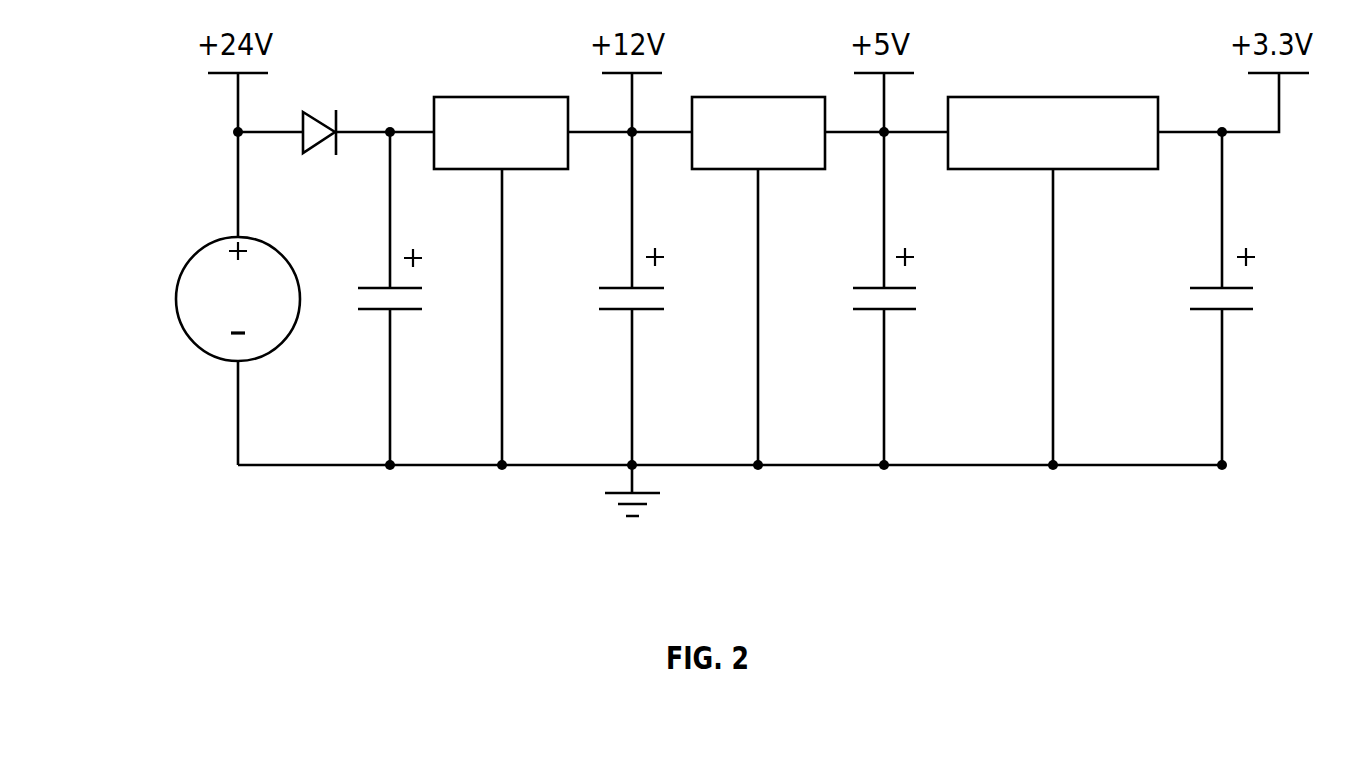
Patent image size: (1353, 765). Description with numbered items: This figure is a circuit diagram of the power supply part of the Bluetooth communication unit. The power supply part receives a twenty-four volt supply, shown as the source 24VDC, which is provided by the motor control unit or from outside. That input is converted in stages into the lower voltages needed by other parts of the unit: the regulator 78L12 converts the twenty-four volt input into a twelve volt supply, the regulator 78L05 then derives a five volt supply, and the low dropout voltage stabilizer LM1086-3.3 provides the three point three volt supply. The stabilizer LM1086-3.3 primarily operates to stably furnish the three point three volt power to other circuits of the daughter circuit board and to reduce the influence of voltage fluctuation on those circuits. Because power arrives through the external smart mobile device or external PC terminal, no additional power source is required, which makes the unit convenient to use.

The +24 VDC power source 24VDC is at (194, 284).
The 78L12 voltage regulator 78L12 is at (501, 281).
The 78L05 voltage regulator 78L05 is at (758, 281).
The low dropout voltage stabilizer LM1086-3.3 is at (1053, 281).